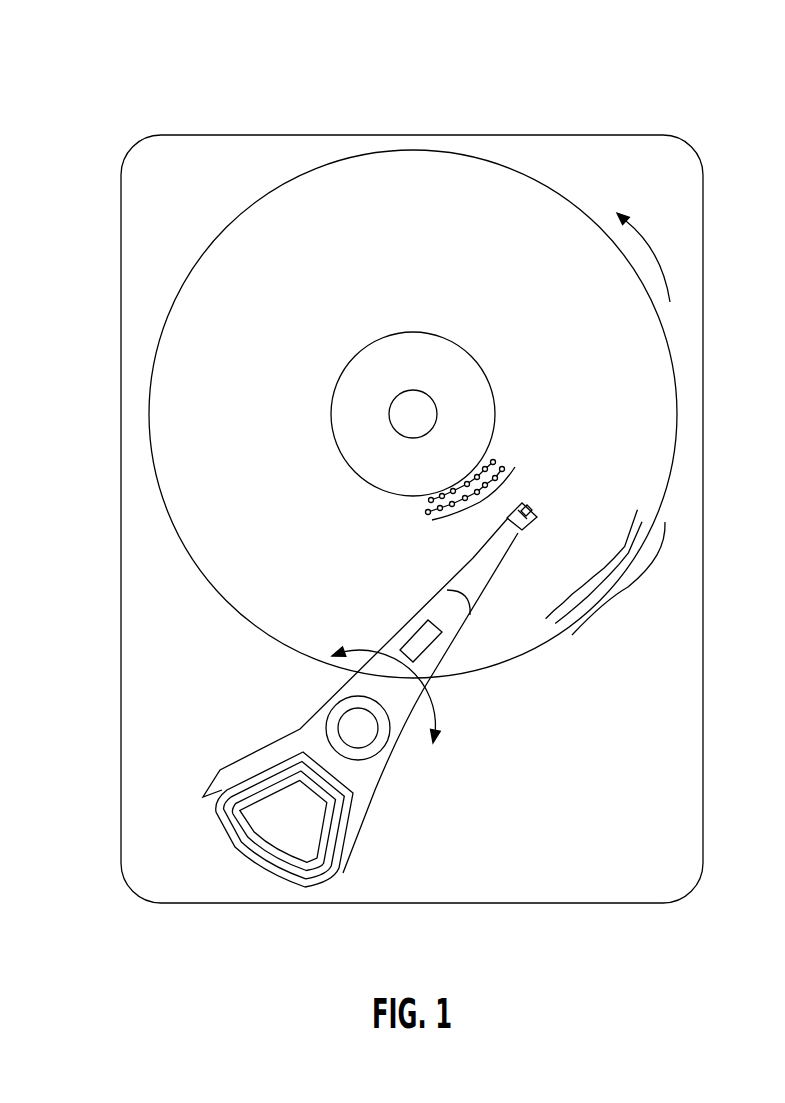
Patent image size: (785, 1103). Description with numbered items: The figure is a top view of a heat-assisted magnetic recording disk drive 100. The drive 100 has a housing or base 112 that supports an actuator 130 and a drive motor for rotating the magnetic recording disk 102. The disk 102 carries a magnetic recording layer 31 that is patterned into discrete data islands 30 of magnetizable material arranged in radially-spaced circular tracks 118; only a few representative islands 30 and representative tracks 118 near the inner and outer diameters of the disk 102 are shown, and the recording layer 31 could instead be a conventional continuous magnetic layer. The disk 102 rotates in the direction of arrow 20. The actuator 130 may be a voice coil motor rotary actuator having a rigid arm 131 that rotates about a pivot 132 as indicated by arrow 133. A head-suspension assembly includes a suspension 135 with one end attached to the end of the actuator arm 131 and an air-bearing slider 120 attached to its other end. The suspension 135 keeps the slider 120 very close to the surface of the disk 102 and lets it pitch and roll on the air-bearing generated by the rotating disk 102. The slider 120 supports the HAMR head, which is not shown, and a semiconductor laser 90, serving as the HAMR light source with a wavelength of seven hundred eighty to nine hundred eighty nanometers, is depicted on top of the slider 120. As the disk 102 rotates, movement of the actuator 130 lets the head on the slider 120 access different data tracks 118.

The HAMR disk drive 100 is at (119, 50).
The housing or base 112 is at (632, 135).
The disk 102 is at (272, 192).
The magnetic recording layer 31 is at (655, 380).
The arrow 20 is at (647, 241).
The tracks 118 is at (422, 499).
The data islands 30 is at (480, 502).
The suspension 135 is at (453, 582).
The rigid arm 131 is at (400, 632).
The arrow 133 is at (433, 712).
The pivot 132 is at (348, 725).
The actuator 130 is at (206, 786).
The semiconductor laser 90 is at (533, 513).
The air-bearing slider 120 is at (530, 521).